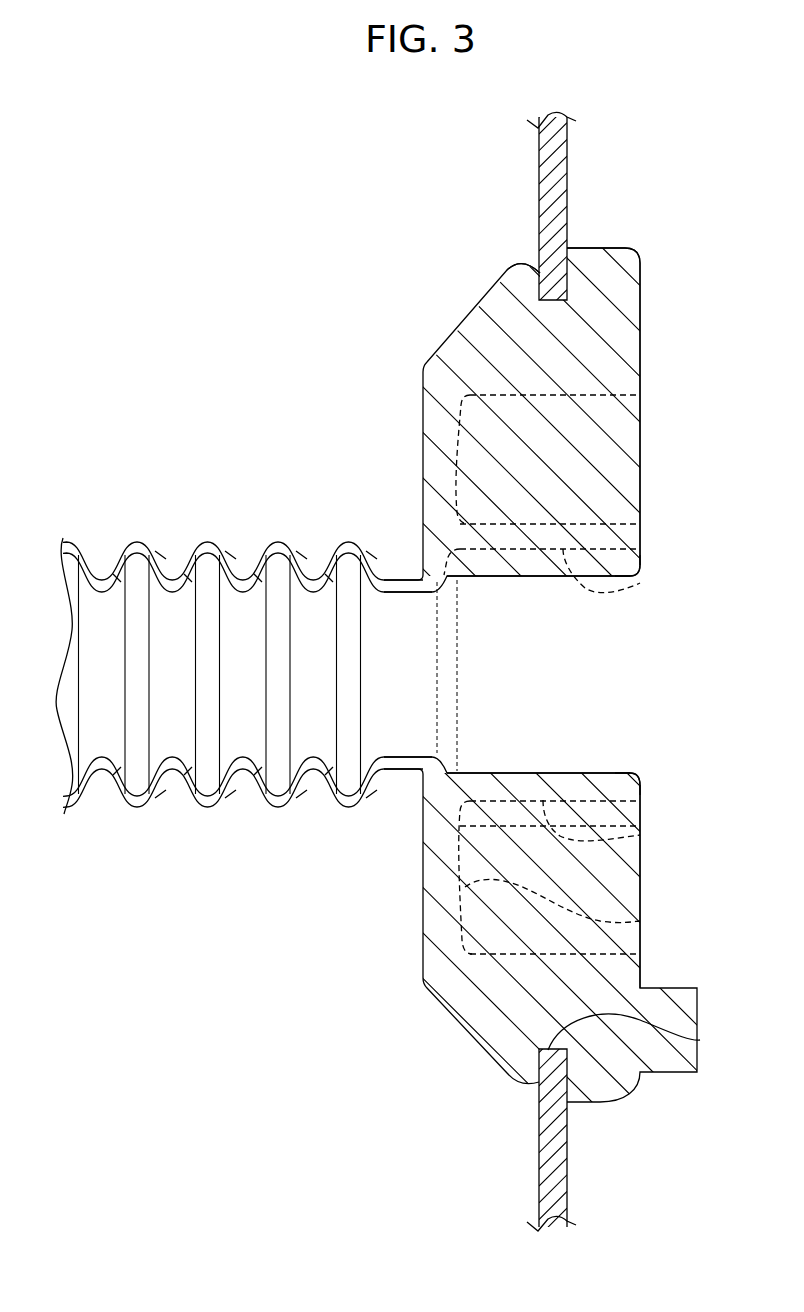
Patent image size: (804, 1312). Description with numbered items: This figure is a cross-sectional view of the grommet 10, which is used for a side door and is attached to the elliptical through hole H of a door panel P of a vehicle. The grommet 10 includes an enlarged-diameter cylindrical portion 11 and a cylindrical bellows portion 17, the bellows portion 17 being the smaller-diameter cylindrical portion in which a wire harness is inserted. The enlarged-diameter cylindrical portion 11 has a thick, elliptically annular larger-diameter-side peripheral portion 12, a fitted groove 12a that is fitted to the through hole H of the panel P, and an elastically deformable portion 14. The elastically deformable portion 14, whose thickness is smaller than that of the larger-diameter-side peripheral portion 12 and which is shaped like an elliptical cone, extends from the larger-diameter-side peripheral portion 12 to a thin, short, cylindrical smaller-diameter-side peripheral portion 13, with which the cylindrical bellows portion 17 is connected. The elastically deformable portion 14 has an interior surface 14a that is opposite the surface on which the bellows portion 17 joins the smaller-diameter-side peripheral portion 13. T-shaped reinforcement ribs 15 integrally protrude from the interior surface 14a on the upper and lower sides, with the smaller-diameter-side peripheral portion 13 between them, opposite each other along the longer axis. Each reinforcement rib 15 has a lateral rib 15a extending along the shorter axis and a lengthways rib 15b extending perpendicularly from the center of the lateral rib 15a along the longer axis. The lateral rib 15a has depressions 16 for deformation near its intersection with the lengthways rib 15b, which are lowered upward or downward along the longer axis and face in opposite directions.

The grommet 10 is at (235, 368).
The enlarged-diameter cylindrical portion 11 is at (457, 1047).
The larger-diameter-side peripheral portion 12 is at (627, 250).
The fitted groove 12a is at (546, 276).
The smaller-diameter-side peripheral portion 13 is at (400, 577).
The elastically deformable portion 14 is at (422, 441).
The interior surface 14a is at (640, 921).
The reinforcement rib 15 is at (542, 585).
The lateral rib 15a is at (641, 563).
The lengthways rib 15b is at (641, 452).
The depression for deformation 16 is at (640, 583).
The cylindrical bellows portion 17 is at (203, 542).
The through hole H is at (700, 1040).
The door panel P is at (568, 1158).